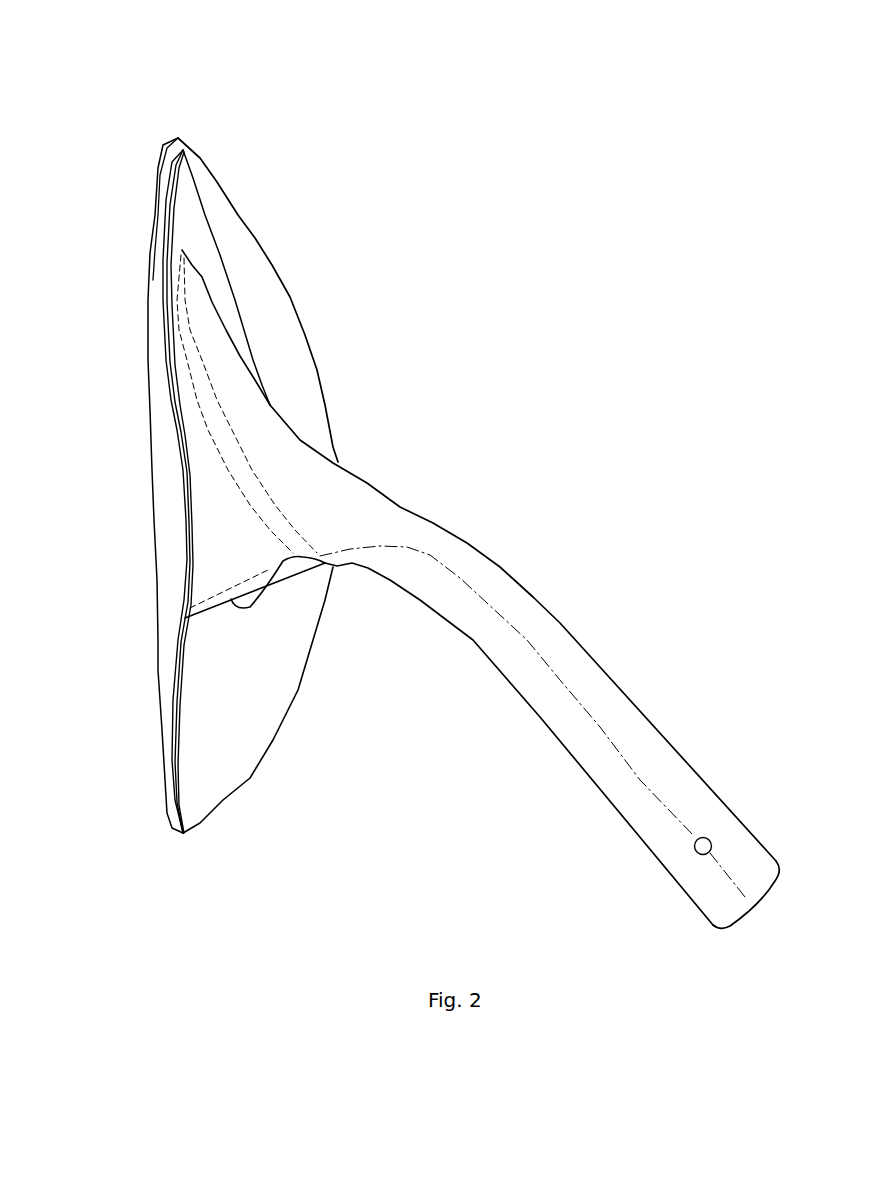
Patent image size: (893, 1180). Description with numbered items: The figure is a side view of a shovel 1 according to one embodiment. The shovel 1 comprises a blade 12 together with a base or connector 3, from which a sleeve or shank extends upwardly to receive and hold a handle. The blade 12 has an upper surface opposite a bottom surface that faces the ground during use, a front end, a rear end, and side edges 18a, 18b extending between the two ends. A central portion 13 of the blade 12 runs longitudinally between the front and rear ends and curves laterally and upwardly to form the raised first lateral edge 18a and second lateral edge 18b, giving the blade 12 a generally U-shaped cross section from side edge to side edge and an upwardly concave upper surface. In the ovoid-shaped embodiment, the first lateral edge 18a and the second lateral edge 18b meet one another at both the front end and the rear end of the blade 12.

The shovel 1 is at (265, 78).
The base 3 is at (225, 338).
The blade 12 is at (157, 237).
The central portion 13 is at (190, 640).
The first lateral edge 18a is at (323, 406).
The second lateral edge 18b is at (183, 483).